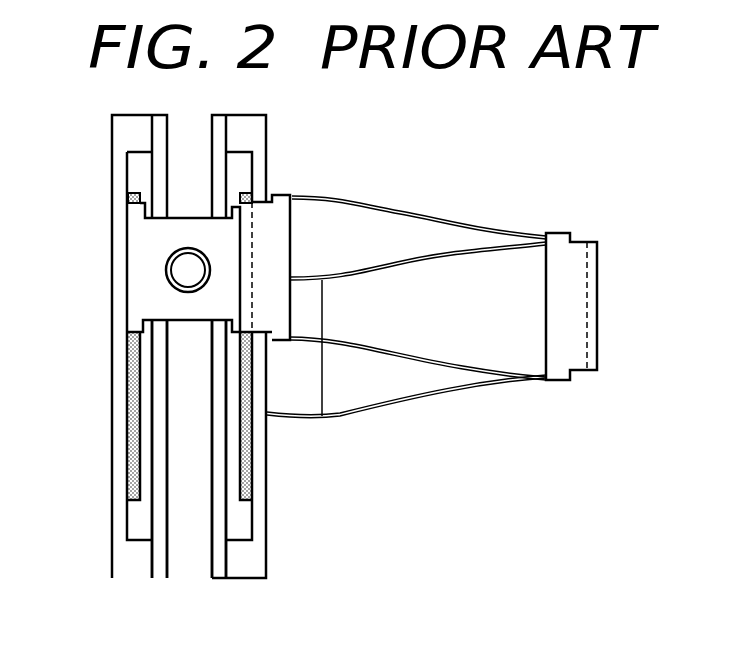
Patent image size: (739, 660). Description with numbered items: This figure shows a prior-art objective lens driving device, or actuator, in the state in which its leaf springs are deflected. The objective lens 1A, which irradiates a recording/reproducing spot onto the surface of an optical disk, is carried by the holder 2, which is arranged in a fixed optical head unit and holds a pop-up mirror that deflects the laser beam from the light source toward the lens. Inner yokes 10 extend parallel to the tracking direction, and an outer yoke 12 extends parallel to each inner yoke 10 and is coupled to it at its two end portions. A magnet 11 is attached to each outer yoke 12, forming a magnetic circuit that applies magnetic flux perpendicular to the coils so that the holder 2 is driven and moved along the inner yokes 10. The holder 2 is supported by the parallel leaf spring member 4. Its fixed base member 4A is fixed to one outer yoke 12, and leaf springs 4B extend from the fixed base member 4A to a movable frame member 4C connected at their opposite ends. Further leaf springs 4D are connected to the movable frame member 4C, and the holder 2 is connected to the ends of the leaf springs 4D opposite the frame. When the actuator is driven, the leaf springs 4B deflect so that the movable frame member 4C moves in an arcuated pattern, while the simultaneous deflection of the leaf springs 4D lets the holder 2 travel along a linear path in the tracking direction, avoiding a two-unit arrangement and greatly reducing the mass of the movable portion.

The objective lens 1A is at (167, 262).
The holder 2 is at (171, 267).
The parallel leaf spring member 4 is at (432, 294).
The fixed base member 4A is at (307, 398).
The leaf springs 4B is at (355, 277).
The movable frame member 4C is at (583, 382).
The leaf springs 4D is at (394, 207).
The inner yokes 10 is at (220, 556).
The magnet 11 is at (137, 372).
The outer yoke 12 is at (113, 527).